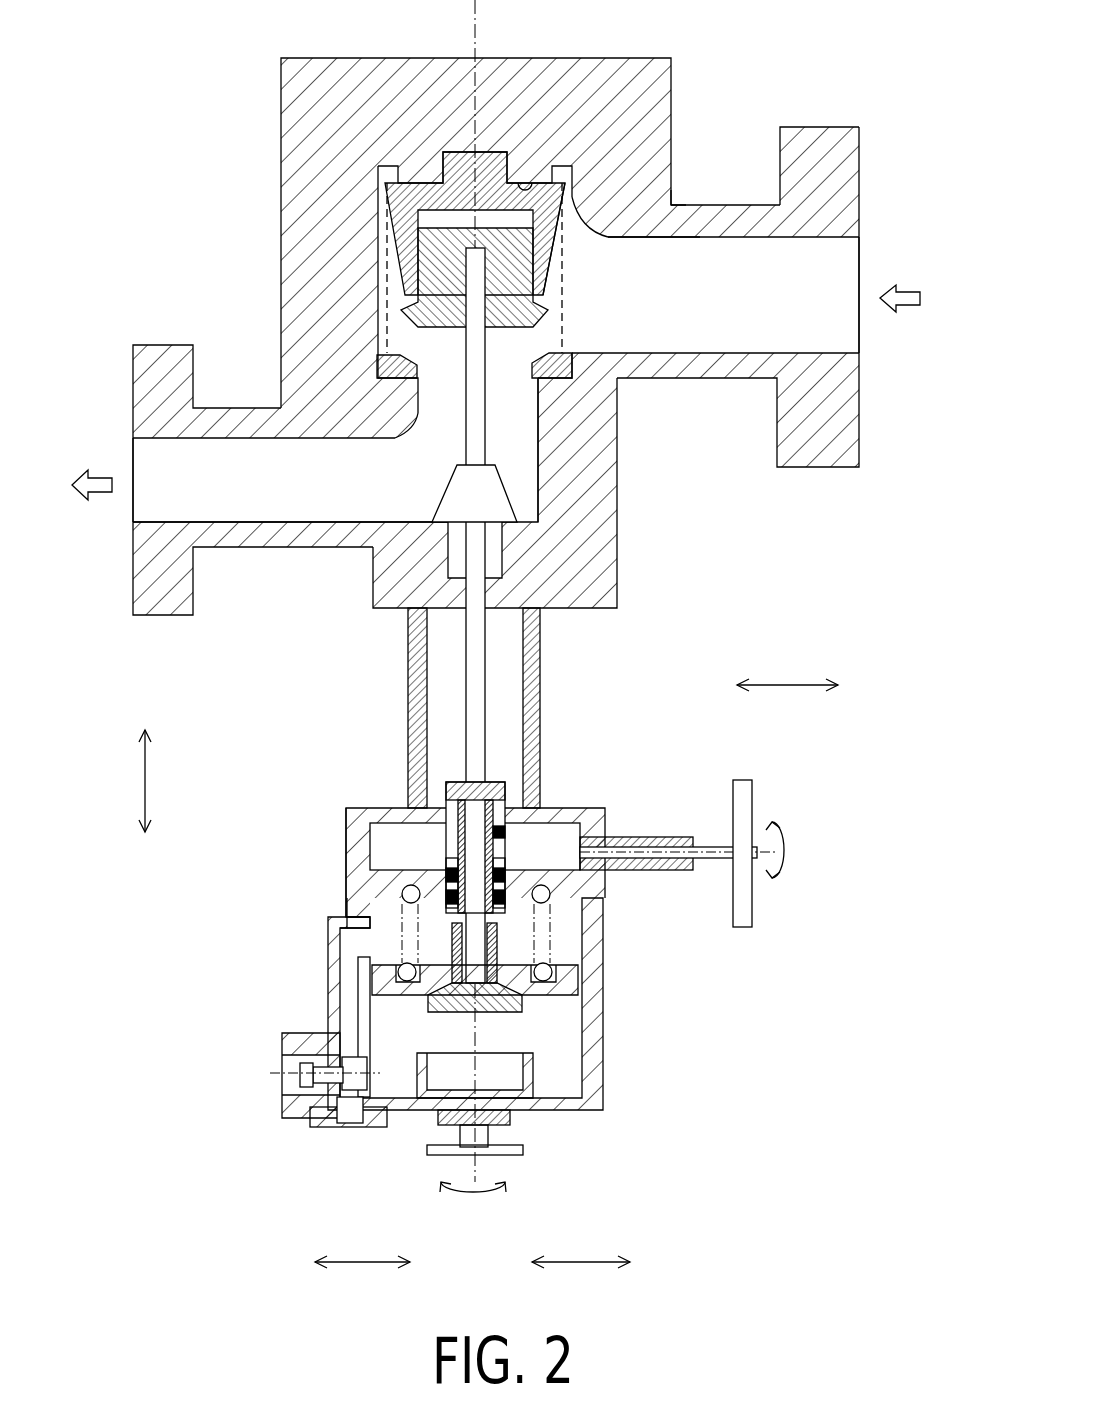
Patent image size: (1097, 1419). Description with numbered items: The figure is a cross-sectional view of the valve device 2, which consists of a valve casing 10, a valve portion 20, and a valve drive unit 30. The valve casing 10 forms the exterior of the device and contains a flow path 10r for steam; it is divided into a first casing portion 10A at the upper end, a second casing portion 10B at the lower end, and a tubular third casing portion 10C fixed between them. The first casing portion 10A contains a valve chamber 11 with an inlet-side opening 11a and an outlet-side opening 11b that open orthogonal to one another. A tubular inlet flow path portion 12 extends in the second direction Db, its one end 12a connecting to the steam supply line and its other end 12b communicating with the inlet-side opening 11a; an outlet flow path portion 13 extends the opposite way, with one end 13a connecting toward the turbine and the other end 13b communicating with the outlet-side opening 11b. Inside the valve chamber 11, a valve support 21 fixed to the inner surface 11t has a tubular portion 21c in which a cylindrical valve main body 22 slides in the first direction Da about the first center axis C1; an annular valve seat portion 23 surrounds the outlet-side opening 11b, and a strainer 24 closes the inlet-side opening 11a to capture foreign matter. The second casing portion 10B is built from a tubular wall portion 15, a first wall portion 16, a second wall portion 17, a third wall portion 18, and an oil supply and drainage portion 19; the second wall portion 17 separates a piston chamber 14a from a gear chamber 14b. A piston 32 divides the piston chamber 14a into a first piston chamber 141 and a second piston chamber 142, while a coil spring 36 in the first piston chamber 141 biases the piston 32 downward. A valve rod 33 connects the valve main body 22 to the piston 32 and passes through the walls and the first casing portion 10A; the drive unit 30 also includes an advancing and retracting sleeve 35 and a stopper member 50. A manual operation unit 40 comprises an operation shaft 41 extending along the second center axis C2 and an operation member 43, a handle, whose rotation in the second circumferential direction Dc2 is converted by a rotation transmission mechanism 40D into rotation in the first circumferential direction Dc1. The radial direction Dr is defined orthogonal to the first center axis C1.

The valve device 2 is at (848, 110).
The valve casing 10 is at (802, 535).
The first casing portion 10A is at (618, 545).
The second casing portion 10B is at (524, 763).
The third casing portion 10C is at (540, 663).
The flow path 10r is at (672, 235).
The valve chamber 11 is at (583, 240).
The inlet-side opening 11a is at (611, 237).
The outlet-side opening 11b is at (537, 392).
The inner surface 11t is at (533, 183).
The inlet flow path portion 12 is at (745, 205).
The one end of the inlet flow path portion 12a is at (862, 250).
The other end of the inlet flow path portion 12b is at (633, 237).
The outlet flow path portion 13 is at (222, 408).
The one end of the outlet flow path portion 13a is at (140, 438).
The other end of the outlet flow path portion 13b is at (537, 445).
The piston chamber 14a is at (558, 985).
The gear chamber 14b is at (348, 806).
The tubular wall portion 15 is at (563, 1020).
The first wall portion 16 is at (560, 1113).
The second wall portion 17 is at (367, 910).
The third wall portion 18 is at (410, 830).
The oil supply and drainage portion 19 is at (347, 1052).
The valve portion 20 is at (432, 267).
The valve support 21 is at (400, 222).
The tubular portion 21c is at (545, 268).
The valve main body 22 is at (403, 318).
The valve seat portion 23 is at (397, 362).
The strainer 24 is at (565, 330).
The valve drive unit 30 is at (338, 862).
The piston 32 is at (390, 980).
The valve rod 33 is at (468, 700).
The advancing and retracting sleeve 35 is at (455, 858).
The coil spring 36 is at (552, 924).
The manual operation unit 40 is at (711, 864).
The rotation transmission mechanism 40D is at (505, 838).
The operation shaft 41 is at (710, 862).
The operation member 43 is at (745, 920).
The stopper member 50 is at (372, 817).
The first piston chamber 141 is at (568, 950).
The second piston chamber 142 is at (565, 1012).
The first center axis C1 is at (480, 1170).
The second center axis C2 is at (760, 875).
The first direction Da is at (138, 783).
The second direction Db is at (788, 678).
The radial direction Dr is at (472, 1255).
The first circumferential direction Dc1 is at (465, 1200).
The second circumferential direction Dc2 is at (797, 850).